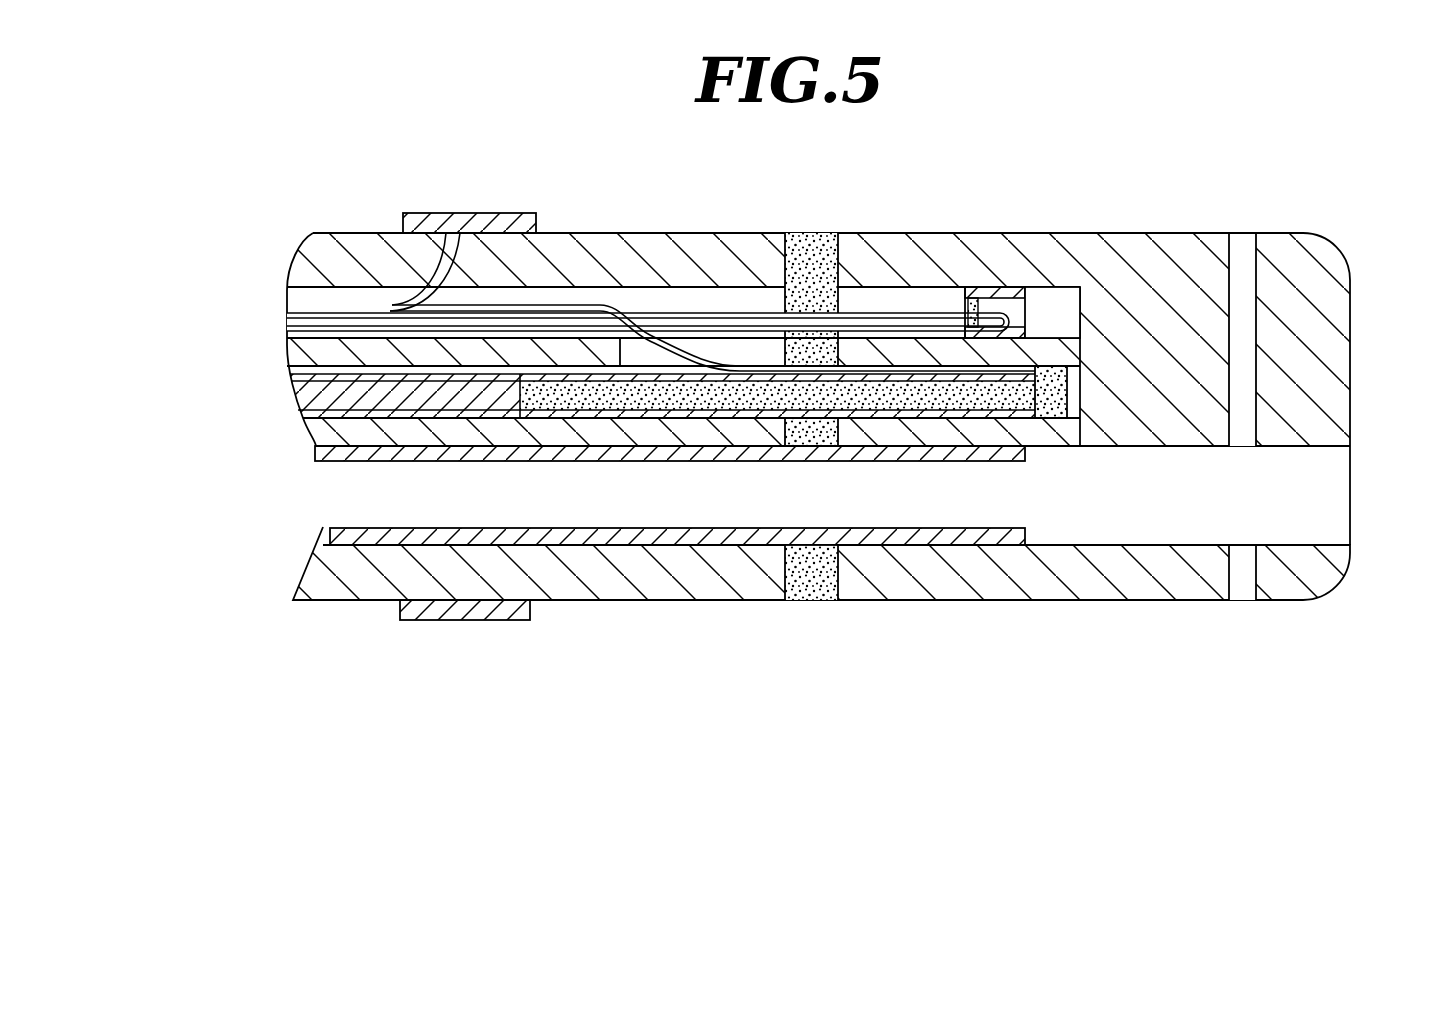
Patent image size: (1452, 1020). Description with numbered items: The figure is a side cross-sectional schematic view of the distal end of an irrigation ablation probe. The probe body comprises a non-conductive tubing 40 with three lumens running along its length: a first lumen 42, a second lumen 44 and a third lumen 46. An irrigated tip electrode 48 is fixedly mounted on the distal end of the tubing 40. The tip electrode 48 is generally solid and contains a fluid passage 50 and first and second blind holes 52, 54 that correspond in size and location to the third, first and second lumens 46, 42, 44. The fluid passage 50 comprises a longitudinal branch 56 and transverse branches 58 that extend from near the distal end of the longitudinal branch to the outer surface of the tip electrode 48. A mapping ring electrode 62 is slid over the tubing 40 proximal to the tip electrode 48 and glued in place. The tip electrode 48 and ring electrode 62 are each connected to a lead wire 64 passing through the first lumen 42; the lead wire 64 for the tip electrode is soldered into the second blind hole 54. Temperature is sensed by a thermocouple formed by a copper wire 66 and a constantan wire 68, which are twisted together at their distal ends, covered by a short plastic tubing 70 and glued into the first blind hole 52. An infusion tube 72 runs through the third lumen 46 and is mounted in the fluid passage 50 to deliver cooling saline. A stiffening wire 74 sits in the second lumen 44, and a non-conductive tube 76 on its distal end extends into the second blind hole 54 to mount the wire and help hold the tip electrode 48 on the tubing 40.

The non-conductive tubing 40 is at (647, 233).
The first lumen 42 is at (300, 296).
The second lumen 44 is at (300, 372).
The third lumen 46 is at (352, 458).
The irrigated tip electrode 48 is at (950, 582).
The fluid passage 50 is at (1068, 508).
The first blind hole 52 is at (1065, 303).
The second blind hole 54 is at (1087, 375).
The longitudinal branch 56 is at (1325, 499).
The transverse branches 58 is at (1247, 297).
The mapping ring electrode 62 is at (483, 213).
The lead wire 64 is at (380, 305).
The copper wire 66 is at (815, 318).
The constantan wire 68 is at (890, 313).
The plastic tubing 70 is at (990, 290).
The infusion tube 72 is at (578, 545).
The stiffening wire 74 is at (295, 402).
The non-conductive tube 76 is at (648, 360).